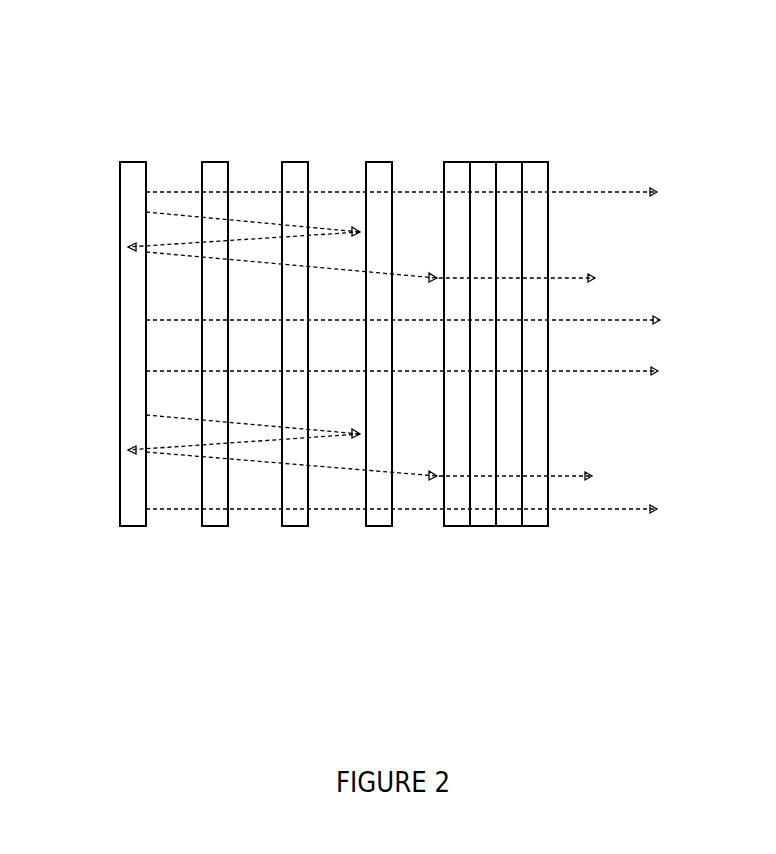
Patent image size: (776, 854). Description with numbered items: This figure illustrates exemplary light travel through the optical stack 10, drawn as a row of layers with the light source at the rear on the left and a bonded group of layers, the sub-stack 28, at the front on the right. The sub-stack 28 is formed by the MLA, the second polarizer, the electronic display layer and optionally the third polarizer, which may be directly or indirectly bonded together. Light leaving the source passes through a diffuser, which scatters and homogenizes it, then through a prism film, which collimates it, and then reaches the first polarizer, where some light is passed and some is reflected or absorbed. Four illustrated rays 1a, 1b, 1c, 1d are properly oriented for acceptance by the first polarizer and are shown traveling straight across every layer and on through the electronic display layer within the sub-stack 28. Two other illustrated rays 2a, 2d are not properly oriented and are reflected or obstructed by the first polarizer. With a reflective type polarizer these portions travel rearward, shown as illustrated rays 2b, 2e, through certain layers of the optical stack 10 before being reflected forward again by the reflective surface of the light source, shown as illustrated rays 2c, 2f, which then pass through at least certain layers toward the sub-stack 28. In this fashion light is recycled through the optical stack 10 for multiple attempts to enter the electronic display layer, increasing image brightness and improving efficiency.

The optical stack 10 is at (577, 75).
The sub-stack 28 is at (444, 540).
The illustrated ray 1a is at (445, 192).
The illustrated ray 1b is at (452, 320).
The illustrated ray 1c is at (452, 371).
The illustrated ray 1d is at (453, 508).
The illustrated ray 2a is at (299, 230).
The illustrated ray 2b is at (196, 246).
The illustrated ray 2c is at (415, 274).
The illustrated ray 2d is at (295, 433).
The illustrated ray 2e is at (196, 451).
The illustrated ray 2f is at (409, 473).